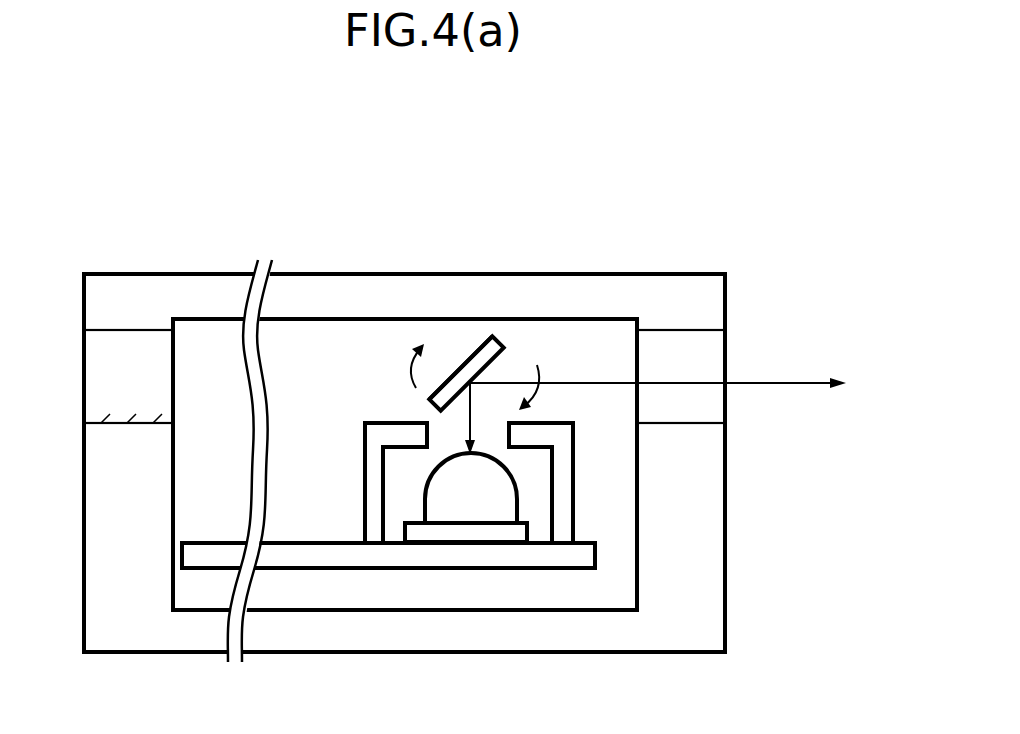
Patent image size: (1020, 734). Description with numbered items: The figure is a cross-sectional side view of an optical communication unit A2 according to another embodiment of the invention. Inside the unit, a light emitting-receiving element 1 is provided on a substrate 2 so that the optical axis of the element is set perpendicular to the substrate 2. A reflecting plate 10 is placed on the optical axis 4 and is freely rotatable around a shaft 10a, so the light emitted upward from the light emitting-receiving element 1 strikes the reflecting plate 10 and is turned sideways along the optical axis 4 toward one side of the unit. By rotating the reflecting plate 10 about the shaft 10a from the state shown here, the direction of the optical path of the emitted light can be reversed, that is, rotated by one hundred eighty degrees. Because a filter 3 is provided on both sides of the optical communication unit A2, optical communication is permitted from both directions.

The light emitting-receiving element 1 is at (493, 508).
The substrate 2 is at (207, 555).
The filter 3 is at (727, 402).
The optical axis 4 is at (790, 383).
The reflecting plate 10 is at (504, 342).
The shaft 10a is at (467, 377).
The optical communication unit A2 is at (757, 225).